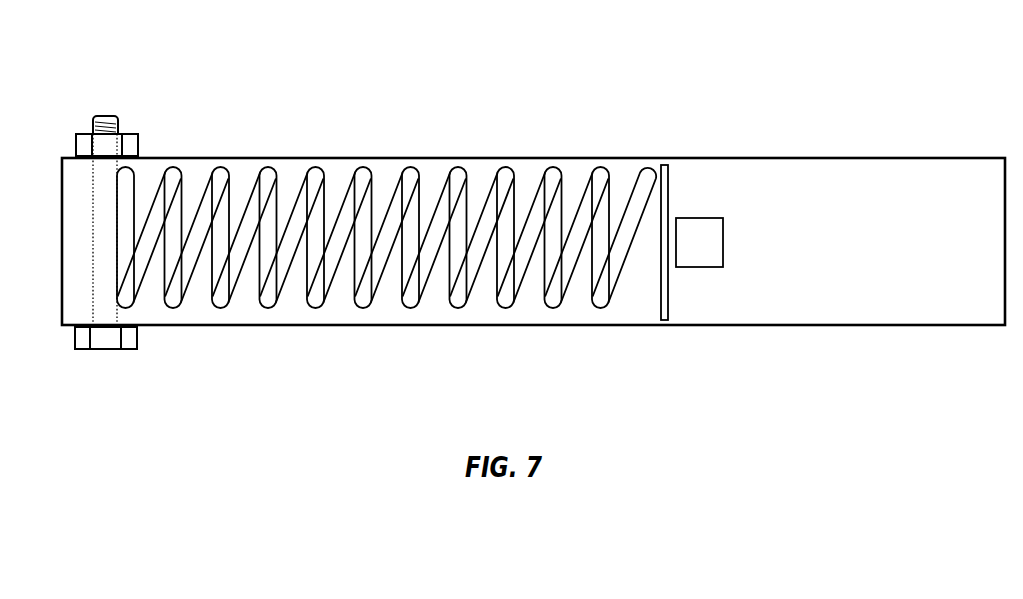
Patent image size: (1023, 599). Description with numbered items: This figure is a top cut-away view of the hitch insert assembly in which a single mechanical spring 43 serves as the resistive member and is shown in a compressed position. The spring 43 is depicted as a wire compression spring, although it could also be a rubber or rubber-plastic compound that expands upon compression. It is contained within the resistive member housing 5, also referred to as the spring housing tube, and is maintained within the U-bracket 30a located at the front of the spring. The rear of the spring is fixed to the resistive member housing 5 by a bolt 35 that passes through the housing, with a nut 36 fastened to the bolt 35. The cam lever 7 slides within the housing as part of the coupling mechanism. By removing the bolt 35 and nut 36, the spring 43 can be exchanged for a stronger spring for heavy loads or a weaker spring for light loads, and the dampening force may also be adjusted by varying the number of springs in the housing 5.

The resistive member housing 5 is at (886, 256).
The cam lever 7 is at (708, 256).
The U-bracket 30a is at (665, 160).
The bolt 35 is at (104, 114).
The nut 36 is at (139, 147).
The mechanical spring 43 is at (457, 167).